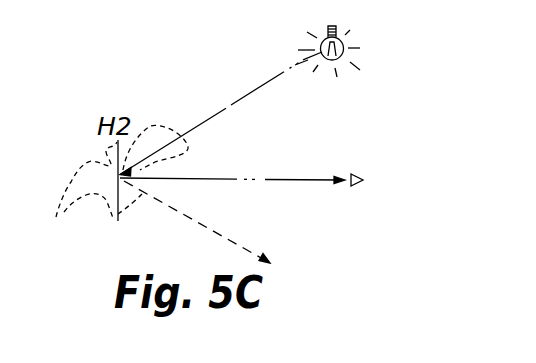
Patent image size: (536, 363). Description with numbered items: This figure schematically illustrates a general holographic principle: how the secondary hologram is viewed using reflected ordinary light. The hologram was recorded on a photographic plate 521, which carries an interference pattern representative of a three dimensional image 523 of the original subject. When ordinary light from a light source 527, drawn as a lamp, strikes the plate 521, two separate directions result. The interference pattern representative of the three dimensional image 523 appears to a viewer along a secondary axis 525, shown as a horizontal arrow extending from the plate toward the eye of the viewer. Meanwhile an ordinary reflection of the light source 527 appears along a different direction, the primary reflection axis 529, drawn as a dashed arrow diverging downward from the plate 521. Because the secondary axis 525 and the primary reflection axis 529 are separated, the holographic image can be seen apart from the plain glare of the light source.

The photographic plate 521 is at (119, 196).
The three dimensional image 523 is at (155, 127).
The secondary axis 525 is at (290, 180).
The light source 527 is at (351, 42).
The primary reflection axis 529 is at (233, 245).